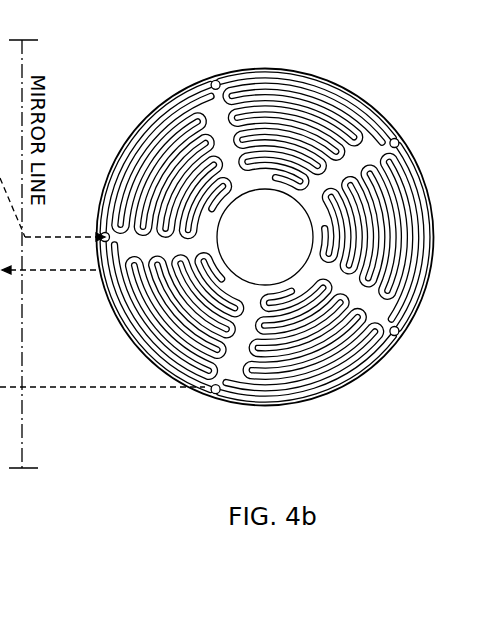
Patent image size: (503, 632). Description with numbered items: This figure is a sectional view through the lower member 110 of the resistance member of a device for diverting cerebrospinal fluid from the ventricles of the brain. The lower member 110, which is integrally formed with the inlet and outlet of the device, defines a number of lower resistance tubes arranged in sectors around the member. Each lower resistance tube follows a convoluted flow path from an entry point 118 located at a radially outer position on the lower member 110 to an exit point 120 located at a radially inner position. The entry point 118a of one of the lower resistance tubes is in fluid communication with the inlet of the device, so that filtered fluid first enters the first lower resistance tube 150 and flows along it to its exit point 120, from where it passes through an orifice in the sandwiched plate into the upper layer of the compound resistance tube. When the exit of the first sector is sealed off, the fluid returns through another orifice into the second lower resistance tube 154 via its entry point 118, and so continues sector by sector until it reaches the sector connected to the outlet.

The lower member 110 is at (406, 135).
The entry point 118 is at (214, 80).
The entry point 118a is at (104, 231).
The exit point 120 is at (213, 183).
The first lower resistance tube 150 is at (172, 357).
The second lower resistance tube 154 is at (373, 339).